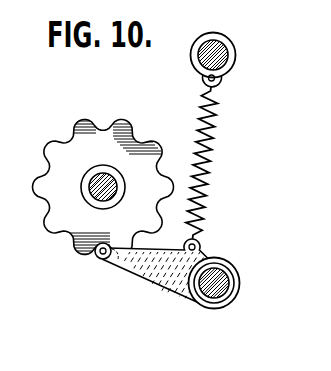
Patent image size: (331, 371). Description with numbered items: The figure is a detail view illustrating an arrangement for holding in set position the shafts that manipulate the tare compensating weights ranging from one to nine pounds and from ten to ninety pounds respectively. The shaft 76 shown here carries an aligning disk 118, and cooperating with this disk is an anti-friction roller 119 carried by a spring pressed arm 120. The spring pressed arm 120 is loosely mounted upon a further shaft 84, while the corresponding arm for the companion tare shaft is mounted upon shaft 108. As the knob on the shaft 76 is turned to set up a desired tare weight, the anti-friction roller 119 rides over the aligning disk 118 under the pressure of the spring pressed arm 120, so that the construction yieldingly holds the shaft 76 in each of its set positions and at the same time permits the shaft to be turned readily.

The aligning disk 118 is at (122, 131).
The shaft 76 is at (110, 186).
The anti-friction roller 119 is at (99, 259).
The spring pressed arm 120 is at (168, 280).
The shaft 84 is at (224, 283).
The shaft 108 is at (226, 58).